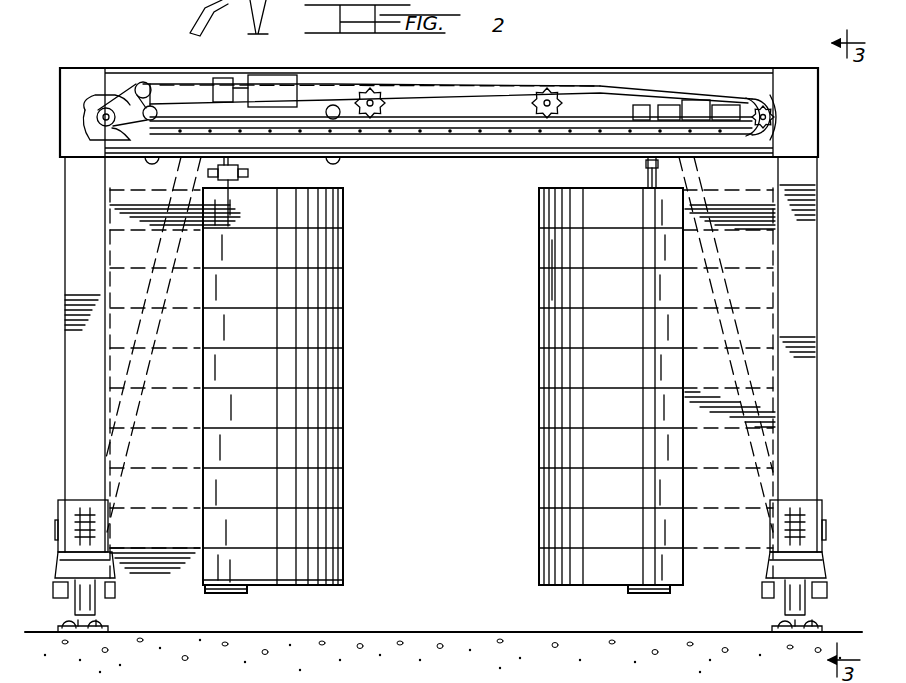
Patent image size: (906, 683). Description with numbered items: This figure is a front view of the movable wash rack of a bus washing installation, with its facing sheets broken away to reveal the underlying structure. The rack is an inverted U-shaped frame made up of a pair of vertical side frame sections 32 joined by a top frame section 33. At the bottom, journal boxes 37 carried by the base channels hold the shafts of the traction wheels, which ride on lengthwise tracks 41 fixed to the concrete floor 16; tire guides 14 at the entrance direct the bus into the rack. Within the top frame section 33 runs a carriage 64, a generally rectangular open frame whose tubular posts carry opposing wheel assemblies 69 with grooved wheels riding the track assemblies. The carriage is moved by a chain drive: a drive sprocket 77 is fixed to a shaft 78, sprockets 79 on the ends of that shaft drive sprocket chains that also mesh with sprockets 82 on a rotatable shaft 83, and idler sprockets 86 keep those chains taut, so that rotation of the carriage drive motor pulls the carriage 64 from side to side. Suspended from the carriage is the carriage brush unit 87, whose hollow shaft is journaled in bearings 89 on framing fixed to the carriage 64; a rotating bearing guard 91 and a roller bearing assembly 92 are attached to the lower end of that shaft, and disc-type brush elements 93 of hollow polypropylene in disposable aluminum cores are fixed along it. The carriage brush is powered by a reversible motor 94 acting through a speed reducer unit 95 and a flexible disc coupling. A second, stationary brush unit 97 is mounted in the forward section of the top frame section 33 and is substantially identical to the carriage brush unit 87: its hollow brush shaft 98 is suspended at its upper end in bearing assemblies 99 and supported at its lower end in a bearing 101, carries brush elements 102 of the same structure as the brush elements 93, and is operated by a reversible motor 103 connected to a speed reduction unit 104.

The tire guides 14 is at (186, 29).
The floor 16 is at (450, 640).
The vertical side frame sections 32 is at (63, 312).
The top frame section 33 is at (745, 45).
The journal boxes 37 is at (76, 616).
The tracks 41 is at (94, 618).
The carriage 64 is at (447, 138).
The wheel assemblies 69 is at (336, 106).
The drive sprocket 77 is at (98, 100).
The shaft 78 is at (95, 129).
The sprockets 79 is at (113, 103).
The sprockets 82 is at (758, 100).
The rotatable shaft 83 is at (776, 119).
The idler sprockets 86 is at (387, 104).
The carriage brush unit 87 is at (345, 565).
The bearings 89 is at (248, 177).
The rotating bearing guard 91 is at (247, 593).
The roller bearing assembly 92 is at (293, 596).
The brush elements 93 is at (325, 327).
The reversible motor 94 is at (289, 80).
The speed reducer unit 95 is at (220, 84).
The stationary brush unit 97 is at (537, 483).
The hollow brush shaft 98 is at (642, 178).
The bearing assemblies 99 is at (664, 164).
The bearing 101 is at (648, 595).
The brush elements 102 is at (552, 296).
The reversible motor 103 is at (697, 108).
The speed reduction unit 104 is at (642, 104).